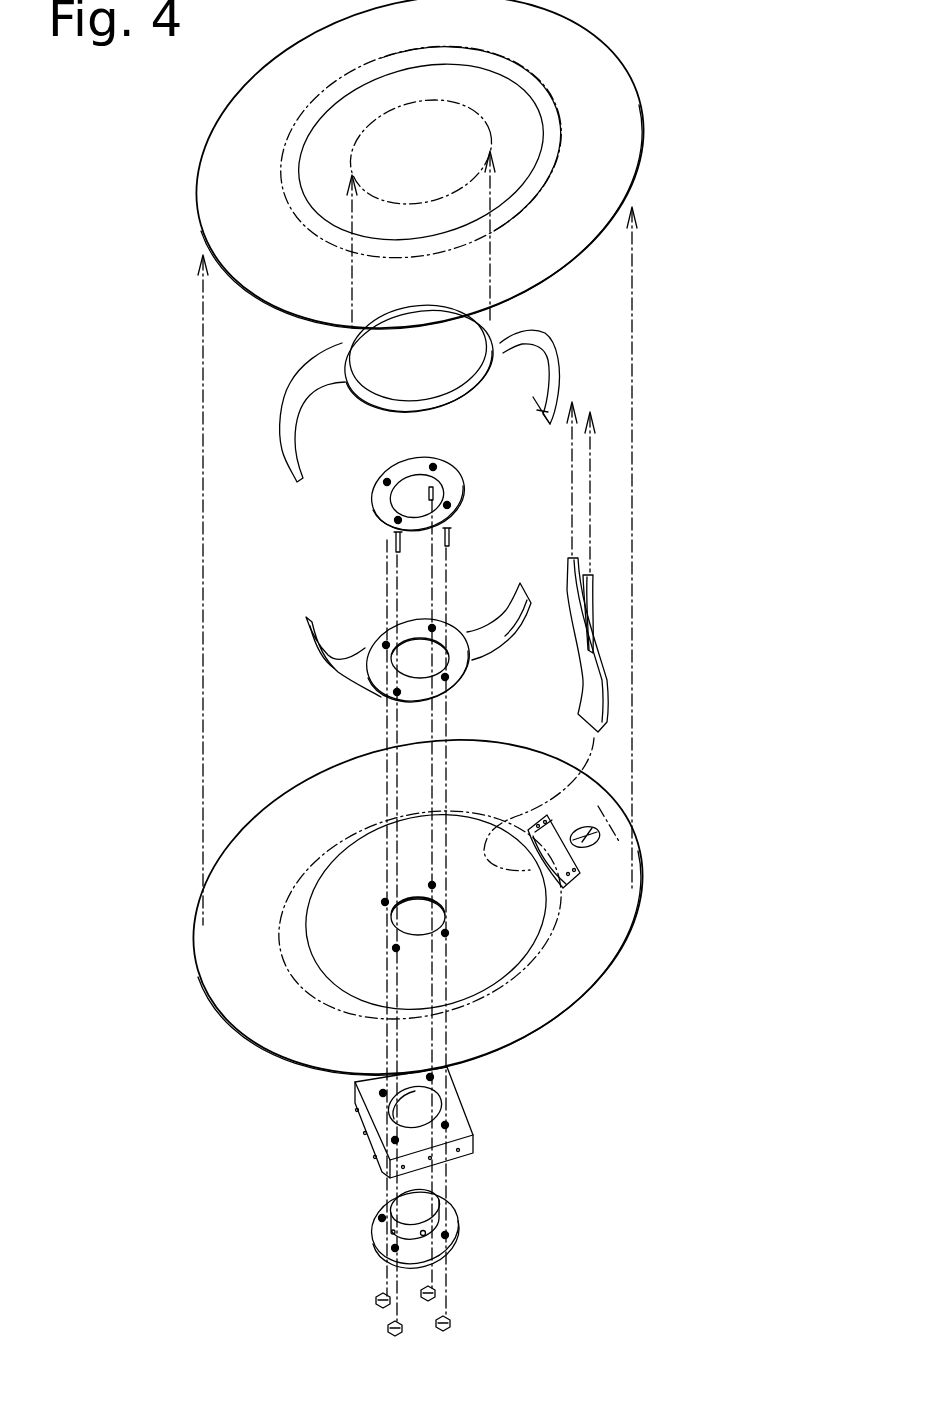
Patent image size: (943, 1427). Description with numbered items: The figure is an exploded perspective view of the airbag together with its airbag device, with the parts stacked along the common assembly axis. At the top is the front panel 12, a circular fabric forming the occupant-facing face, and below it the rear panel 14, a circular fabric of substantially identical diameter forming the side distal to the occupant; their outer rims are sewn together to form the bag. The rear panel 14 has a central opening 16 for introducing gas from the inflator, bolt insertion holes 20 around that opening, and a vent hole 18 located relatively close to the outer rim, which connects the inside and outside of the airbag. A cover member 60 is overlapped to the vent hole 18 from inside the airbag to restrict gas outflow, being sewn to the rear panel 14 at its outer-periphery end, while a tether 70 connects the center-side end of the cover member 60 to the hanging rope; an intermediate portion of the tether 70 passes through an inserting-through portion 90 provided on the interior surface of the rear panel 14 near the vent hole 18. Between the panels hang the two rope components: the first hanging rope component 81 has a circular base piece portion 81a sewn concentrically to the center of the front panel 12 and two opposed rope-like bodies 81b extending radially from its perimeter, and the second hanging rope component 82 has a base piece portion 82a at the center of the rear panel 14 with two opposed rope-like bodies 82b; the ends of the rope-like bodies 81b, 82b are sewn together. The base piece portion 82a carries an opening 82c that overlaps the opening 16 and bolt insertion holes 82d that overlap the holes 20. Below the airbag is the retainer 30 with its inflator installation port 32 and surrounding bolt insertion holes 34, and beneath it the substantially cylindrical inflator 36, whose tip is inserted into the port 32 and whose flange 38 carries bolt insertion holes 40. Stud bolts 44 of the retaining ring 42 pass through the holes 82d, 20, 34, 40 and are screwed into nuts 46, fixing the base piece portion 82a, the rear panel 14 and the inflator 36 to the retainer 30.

The front panel 12 is at (577, 50).
The rear panel 14 is at (429, 907).
The opening 16 is at (383, 921).
The vent hole 18 is at (594, 848).
The bolt insertion holes 20 is at (430, 882).
The retainer 30 is at (448, 1121).
The inflator installation port 32 is at (417, 1104).
The bolt insertion holes 34 is at (352, 1097).
The inflator 36 is at (433, 1204).
The flange 38 is at (436, 1231).
The bolt insertion holes 40 is at (382, 1220).
The retaining ring 42 is at (455, 487).
The stud bolts 44 is at (448, 530).
The nuts 46 is at (388, 1330).
The cover member 60 is at (610, 704).
The tether 70 is at (574, 598).
The first hanging rope component 81 is at (479, 379).
The base piece portion 81a is at (362, 408).
The rope-like bodies 81b is at (290, 378).
The second hanging rope component 82 is at (336, 647).
The base piece portion 82a is at (473, 673).
The rope-like bodies 82b is at (510, 605).
The opening 82c is at (403, 662).
The bolt insertion holes 82d is at (383, 642).
The inserting-through portion 90 is at (578, 867).